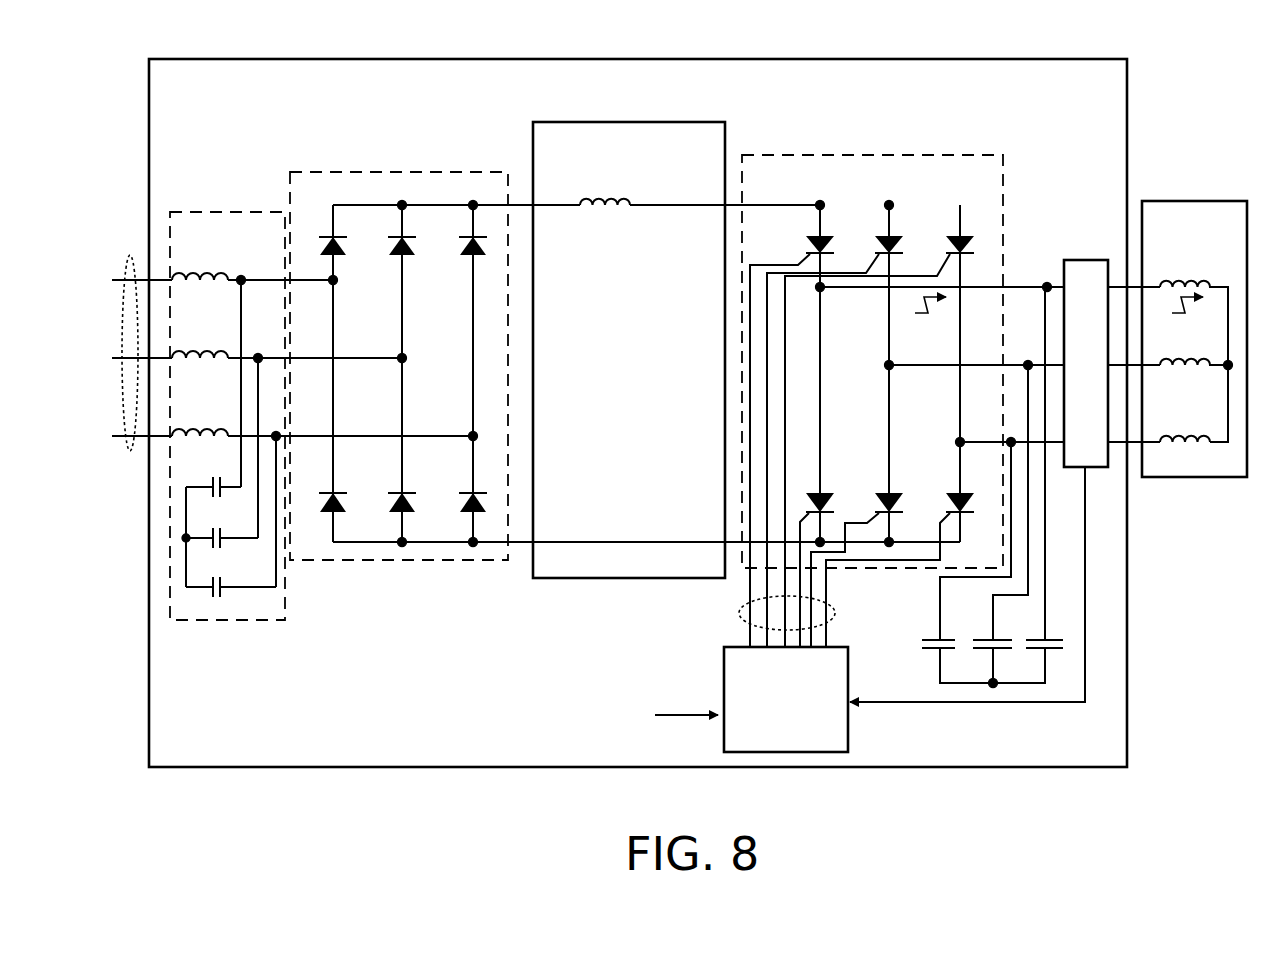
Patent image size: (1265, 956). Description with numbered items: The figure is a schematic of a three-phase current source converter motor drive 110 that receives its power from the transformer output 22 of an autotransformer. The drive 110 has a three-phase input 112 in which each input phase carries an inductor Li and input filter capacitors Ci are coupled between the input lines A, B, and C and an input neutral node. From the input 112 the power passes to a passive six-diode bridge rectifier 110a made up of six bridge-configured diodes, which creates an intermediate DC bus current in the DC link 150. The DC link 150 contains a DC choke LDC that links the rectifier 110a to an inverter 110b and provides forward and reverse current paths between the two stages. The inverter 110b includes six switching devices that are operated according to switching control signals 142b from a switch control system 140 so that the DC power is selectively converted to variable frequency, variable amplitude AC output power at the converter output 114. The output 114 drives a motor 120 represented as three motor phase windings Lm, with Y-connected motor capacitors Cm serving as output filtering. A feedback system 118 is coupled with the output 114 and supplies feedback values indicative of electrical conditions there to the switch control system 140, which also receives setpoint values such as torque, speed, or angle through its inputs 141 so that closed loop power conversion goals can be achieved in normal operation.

The current source converter motor drive 110 is at (149, 77).
The transformer output 22 is at (127, 266).
The three-phase input 112 is at (238, 212).
The passive six-diode bridge rectifier 110a is at (332, 172).
The DC link 150 is at (533, 147).
The inverter 110b is at (1003, 178).
The switching control signals 142b is at (741, 612).
The feedback system 118 is at (1064, 266).
The converter output 114 is at (1135, 492).
The motor 120 is at (1188, 201).
The switch control system 140 is at (724, 684).
The setpoint inputs 141 is at (686, 718).